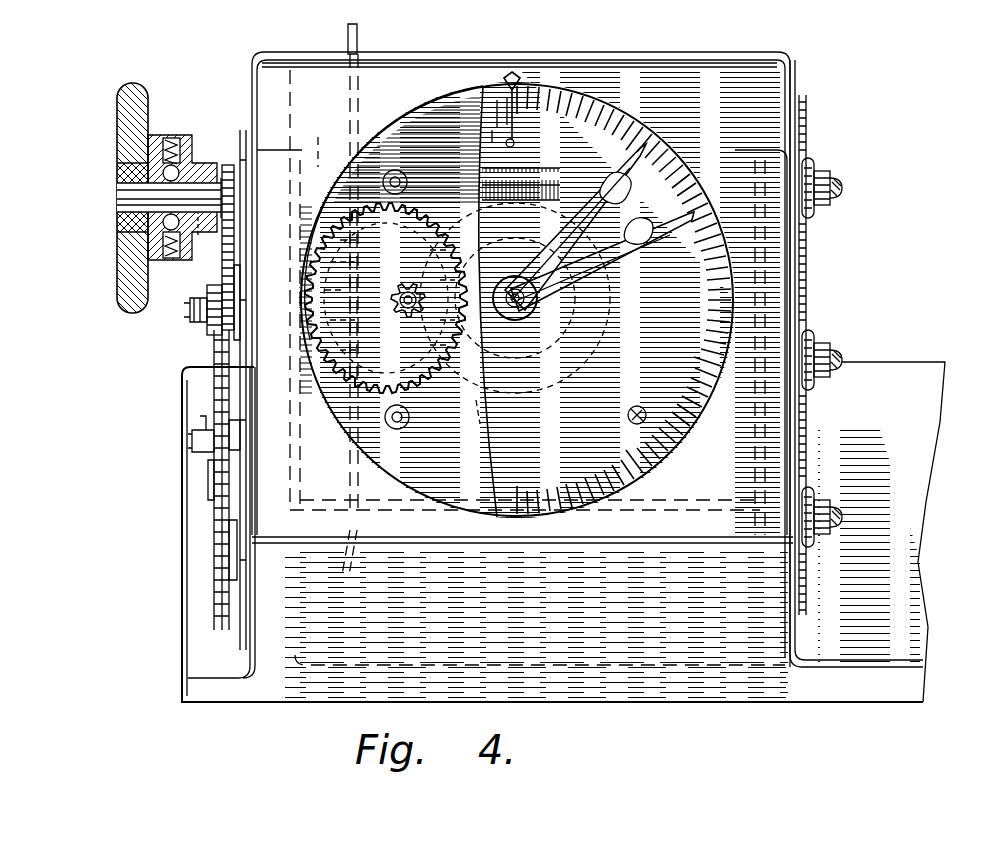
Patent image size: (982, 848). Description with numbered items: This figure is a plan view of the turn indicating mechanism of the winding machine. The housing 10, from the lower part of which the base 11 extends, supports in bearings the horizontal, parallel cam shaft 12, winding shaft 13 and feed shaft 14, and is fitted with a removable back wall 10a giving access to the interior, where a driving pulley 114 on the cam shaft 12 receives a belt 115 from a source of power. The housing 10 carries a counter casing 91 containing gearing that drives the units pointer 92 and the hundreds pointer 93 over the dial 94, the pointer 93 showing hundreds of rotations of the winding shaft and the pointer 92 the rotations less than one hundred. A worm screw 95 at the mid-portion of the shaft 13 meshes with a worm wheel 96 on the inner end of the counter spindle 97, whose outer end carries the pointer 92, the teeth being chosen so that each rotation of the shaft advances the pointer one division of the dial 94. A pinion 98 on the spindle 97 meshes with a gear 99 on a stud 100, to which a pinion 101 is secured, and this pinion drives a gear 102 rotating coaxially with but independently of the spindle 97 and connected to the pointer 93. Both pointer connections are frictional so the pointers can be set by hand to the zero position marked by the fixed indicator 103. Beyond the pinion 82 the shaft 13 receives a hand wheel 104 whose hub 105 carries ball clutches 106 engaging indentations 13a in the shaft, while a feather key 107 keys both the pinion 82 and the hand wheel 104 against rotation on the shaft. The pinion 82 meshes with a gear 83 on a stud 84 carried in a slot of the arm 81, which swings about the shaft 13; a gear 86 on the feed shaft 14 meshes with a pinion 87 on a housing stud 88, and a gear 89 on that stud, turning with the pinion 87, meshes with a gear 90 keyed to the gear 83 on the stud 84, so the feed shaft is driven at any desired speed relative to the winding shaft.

The housing 10 is at (665, 690).
The removable back wall 10a is at (428, 56).
The base 11 is at (898, 692).
The cam shaft 12 is at (828, 343).
The winding shaft 13 is at (318, 139).
The indentations 13a is at (210, 232).
The feed shaft 14 is at (826, 516).
The arm 81 is at (250, 388).
The pinion 82 is at (227, 164).
The gear 83 is at (222, 272).
The stud 84 is at (188, 314).
The gear 86 is at (238, 596).
The pinion 87 is at (248, 422).
The stud 88 is at (192, 440).
The gear 89 is at (213, 480).
The gear 90 is at (212, 294).
The counter casing 91 is at (482, 515).
The units pointer 92 is at (602, 261).
The hundreds pointer 93 is at (616, 194).
The dial 94 is at (795, 292).
The worm screw 95 is at (521, 167).
The worm wheel 96 is at (605, 301).
The counter spindle 97 is at (505, 328).
The pinion 98 is at (527, 322).
The gear 99 is at (399, 313).
The stud 100 is at (412, 288).
The pinion 101 is at (405, 312).
The gear 102 is at (456, 390).
The fixed indicator 103 is at (520, 72).
The hand wheel 104 is at (130, 100).
The hub 105 is at (200, 164).
The ball clutches 106 is at (164, 174).
The feather key 107 is at (128, 198).
The driving pulley 114 is at (337, 562).
The belt 115 is at (348, 36).